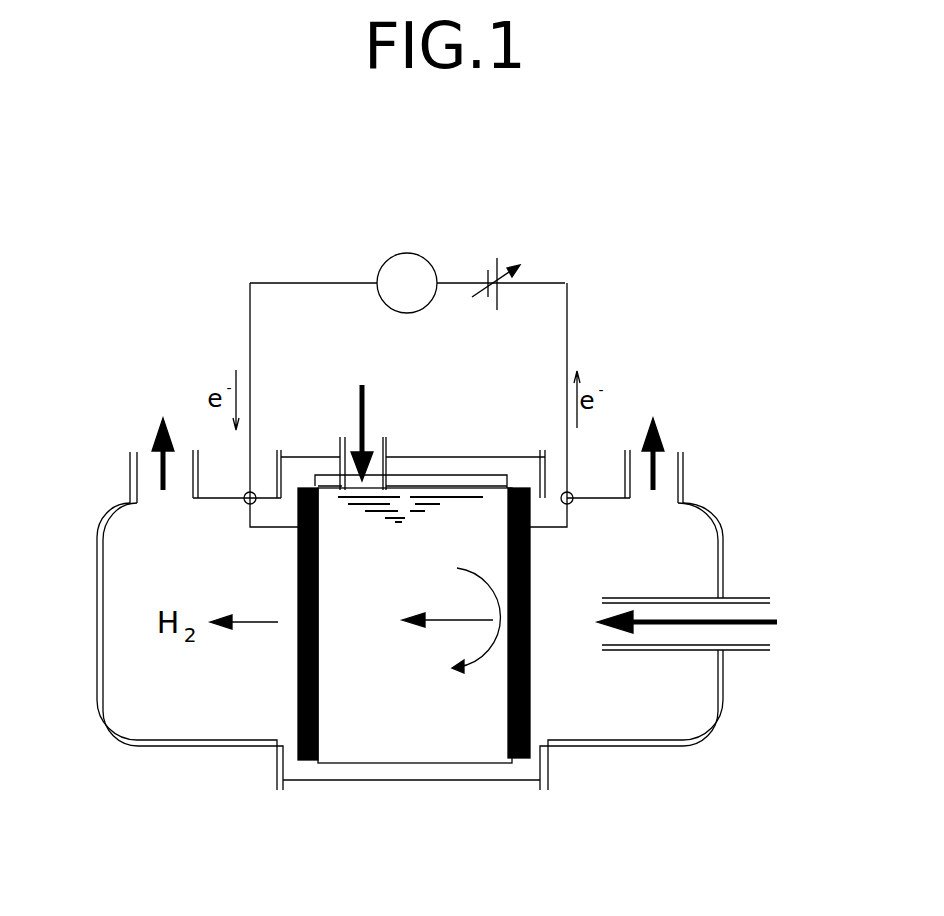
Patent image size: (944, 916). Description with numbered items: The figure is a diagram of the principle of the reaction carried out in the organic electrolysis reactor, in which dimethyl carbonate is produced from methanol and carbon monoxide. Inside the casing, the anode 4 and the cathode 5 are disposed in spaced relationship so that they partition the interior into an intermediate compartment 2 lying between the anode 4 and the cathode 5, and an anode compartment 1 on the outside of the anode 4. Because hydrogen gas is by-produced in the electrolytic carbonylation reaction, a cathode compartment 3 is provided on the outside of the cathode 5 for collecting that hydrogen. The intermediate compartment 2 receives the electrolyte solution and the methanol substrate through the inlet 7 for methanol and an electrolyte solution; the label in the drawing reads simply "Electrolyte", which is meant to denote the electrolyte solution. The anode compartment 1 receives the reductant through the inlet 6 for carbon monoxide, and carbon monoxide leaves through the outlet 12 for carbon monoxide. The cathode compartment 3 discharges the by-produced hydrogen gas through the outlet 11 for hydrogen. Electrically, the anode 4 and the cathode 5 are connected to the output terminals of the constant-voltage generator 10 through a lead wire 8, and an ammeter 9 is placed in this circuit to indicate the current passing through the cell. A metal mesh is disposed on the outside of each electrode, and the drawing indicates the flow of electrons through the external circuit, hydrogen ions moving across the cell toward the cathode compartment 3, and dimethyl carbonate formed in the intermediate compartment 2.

The anode compartment 1 is at (635, 712).
The intermediate compartment 2 is at (360, 742).
The cathode compartment 3 is at (173, 712).
The anode 4 is at (530, 712).
The cathode 5 is at (300, 712).
The inlet for carbon monoxide 6 is at (760, 650).
The inlet for methanol and an electrolyte solution 7 is at (335, 452).
The lead wire 8 is at (567, 345).
The ammeter 9 is at (430, 262).
The constant-voltage generator 10 is at (505, 263).
The outlet for hydrogen 11 is at (132, 453).
The outlet for carbon monoxide 12 is at (683, 450).